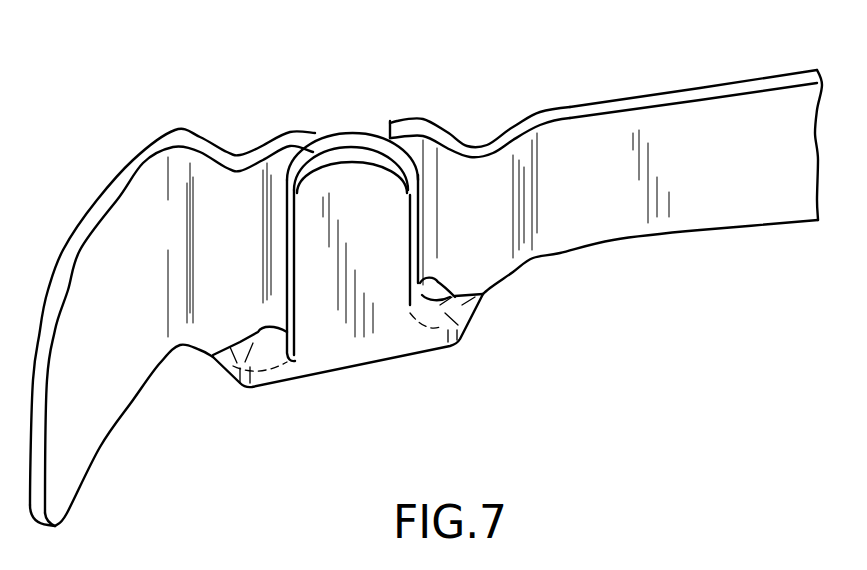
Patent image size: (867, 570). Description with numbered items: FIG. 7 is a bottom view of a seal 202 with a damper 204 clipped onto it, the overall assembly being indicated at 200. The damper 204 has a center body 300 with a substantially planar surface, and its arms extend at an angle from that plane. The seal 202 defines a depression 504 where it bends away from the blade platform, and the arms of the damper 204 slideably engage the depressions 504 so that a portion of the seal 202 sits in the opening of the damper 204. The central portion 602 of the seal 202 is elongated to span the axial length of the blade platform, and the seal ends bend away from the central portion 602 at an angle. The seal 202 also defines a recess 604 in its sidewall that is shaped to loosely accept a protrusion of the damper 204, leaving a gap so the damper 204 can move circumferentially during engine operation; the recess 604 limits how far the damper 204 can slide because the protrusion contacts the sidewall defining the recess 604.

The clamp assembly 200 is at (122, 86).
The seal 202 is at (613, 233).
The damper 204 is at (360, 148).
The center body 300 is at (352, 350).
The depression 504 is at (228, 197).
The central portion 602 is at (682, 122).
The recess 604 is at (72, 310).